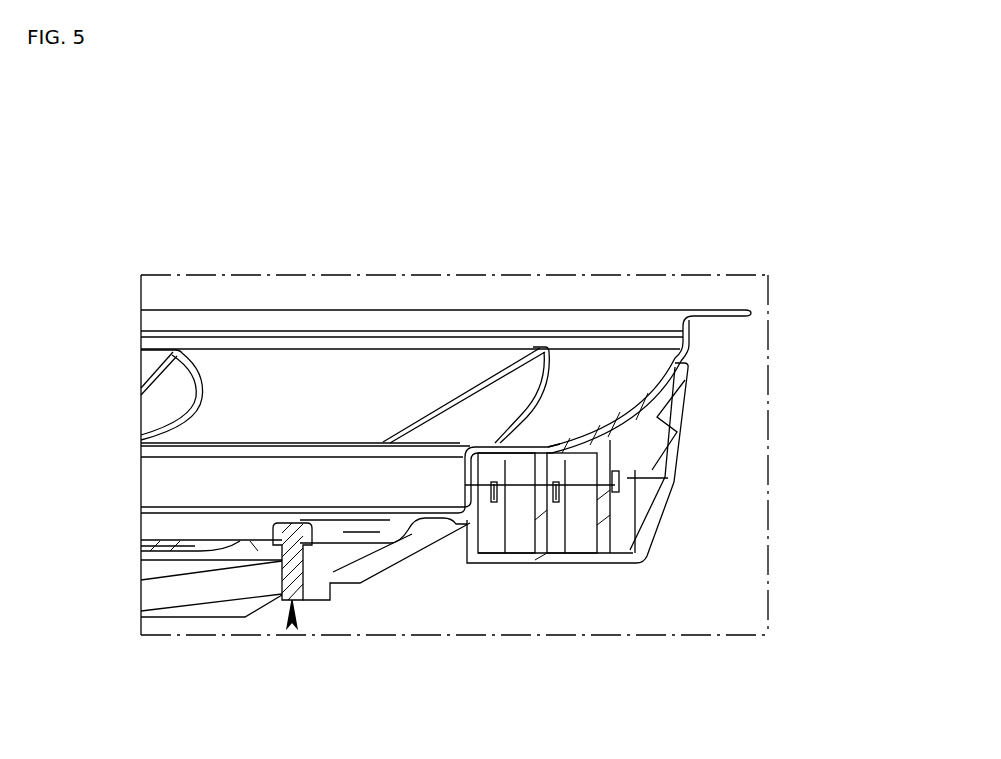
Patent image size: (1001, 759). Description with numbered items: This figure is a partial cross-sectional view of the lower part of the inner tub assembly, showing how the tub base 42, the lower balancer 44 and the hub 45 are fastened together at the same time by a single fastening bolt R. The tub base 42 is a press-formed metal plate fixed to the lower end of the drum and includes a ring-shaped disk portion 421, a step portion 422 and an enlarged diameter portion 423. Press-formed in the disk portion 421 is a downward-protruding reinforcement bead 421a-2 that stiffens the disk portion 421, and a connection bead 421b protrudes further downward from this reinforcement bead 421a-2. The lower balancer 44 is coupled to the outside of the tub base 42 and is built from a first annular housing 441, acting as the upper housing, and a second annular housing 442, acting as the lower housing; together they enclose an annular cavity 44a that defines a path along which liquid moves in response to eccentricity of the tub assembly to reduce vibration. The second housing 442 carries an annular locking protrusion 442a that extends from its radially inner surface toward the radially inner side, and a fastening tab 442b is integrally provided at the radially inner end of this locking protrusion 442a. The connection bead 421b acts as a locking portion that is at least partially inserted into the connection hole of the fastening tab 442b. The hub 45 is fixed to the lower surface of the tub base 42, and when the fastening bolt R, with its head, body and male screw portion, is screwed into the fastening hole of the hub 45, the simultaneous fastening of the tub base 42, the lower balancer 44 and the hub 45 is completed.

The tub base 42 is at (446, 231).
The enlarged diameter portion 423 is at (684, 341).
The lower balancer 44 is at (723, 400).
The first annular housing 441 is at (674, 438).
The second annular housing 442 is at (658, 518).
The step portion 422 is at (463, 478).
The fastening tab 442b is at (222, 552).
The hub 45 is at (182, 597).
The connection bead 421b is at (265, 562).
The fastening bolt R is at (290, 632).
The annular locking protrusion 442a is at (408, 538).
The reinforcement bead 421a-2 is at (405, 550).
The disk portion 421 is at (452, 540).
The annular cavity 44a is at (638, 527).